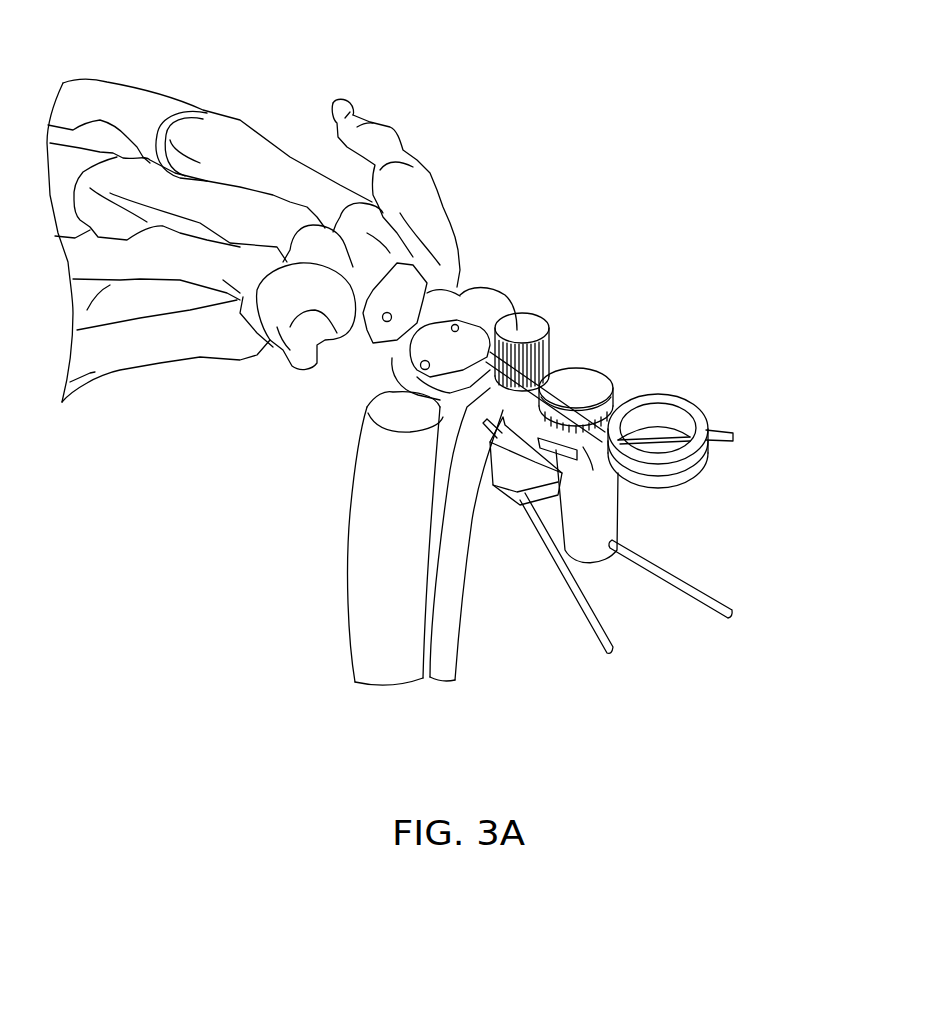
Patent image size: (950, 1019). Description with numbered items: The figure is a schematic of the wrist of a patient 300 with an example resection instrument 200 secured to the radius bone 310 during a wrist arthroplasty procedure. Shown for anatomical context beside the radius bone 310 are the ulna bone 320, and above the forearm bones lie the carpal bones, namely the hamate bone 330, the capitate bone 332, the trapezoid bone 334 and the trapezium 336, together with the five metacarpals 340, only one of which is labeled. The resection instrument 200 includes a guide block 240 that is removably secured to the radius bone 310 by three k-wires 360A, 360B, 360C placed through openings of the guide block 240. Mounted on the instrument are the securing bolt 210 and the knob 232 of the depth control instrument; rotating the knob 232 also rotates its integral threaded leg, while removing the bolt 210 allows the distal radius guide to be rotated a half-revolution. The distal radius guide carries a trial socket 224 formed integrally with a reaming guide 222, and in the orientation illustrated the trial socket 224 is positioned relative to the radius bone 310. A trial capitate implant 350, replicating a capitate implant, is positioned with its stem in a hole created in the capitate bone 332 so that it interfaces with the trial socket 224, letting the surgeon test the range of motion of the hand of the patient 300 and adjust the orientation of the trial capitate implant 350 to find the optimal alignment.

The patient 300 is at (598, 97).
The resection instrument 200 is at (760, 308).
The metacarpals 340 is at (240, 120).
The capitate bone 332 is at (295, 238).
The trapezoid bone 334 is at (350, 210).
The trapezium 336 is at (457, 257).
The hamate bone 330 is at (290, 362).
The trial capitate implant 350 is at (373, 335).
The ulna bone 320 is at (360, 648).
The radius bone 310 is at (455, 668).
The trial socket 224 is at (408, 350).
The knob 232 is at (528, 327).
The securing bolt 210 is at (596, 383).
The reaming guide 222 is at (686, 476).
The guide block 240 is at (605, 510).
The k-wire 360A is at (588, 618).
The k-wire 360B is at (710, 598).
The k-wire 360C is at (727, 432).